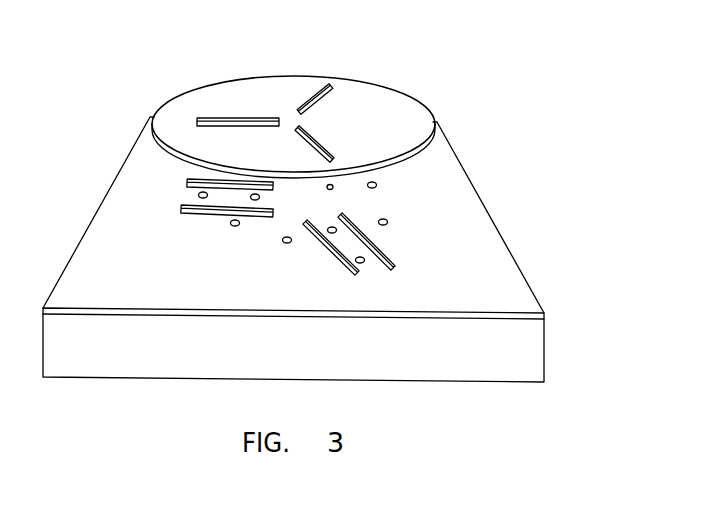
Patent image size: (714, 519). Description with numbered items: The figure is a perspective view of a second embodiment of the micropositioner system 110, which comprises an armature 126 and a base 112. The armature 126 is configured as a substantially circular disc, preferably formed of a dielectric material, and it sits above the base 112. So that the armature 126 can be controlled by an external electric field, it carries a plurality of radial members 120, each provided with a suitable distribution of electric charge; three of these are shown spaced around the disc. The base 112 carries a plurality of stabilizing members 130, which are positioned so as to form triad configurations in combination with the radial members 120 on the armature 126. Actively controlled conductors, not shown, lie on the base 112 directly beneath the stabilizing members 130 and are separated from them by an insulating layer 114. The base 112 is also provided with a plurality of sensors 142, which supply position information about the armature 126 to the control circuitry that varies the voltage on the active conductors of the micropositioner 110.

The micropositioner system 110 is at (513, 103).
The base 112 is at (497, 348).
The insulating layer 114 is at (497, 298).
The radial members 120 is at (220, 118).
The armature 126 is at (350, 102).
The stabilizing members 130 is at (193, 180).
The sensors 142 is at (199, 194).